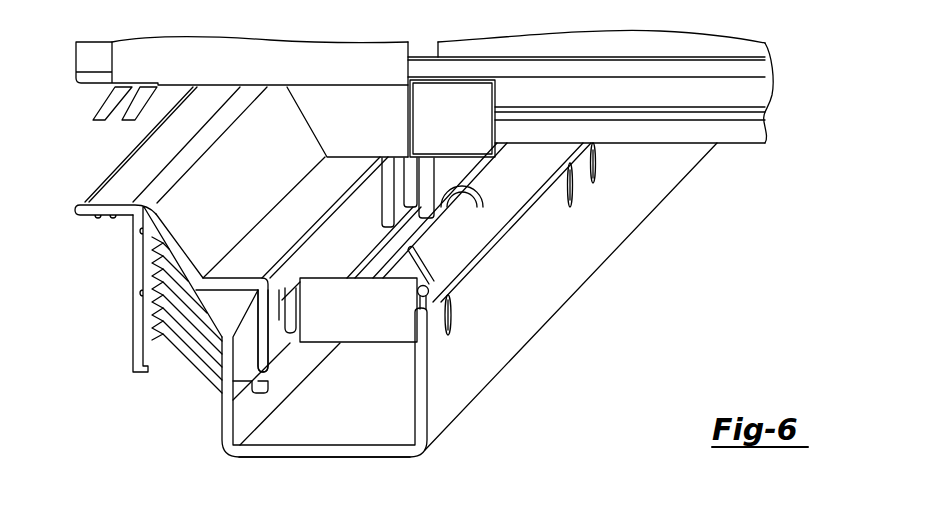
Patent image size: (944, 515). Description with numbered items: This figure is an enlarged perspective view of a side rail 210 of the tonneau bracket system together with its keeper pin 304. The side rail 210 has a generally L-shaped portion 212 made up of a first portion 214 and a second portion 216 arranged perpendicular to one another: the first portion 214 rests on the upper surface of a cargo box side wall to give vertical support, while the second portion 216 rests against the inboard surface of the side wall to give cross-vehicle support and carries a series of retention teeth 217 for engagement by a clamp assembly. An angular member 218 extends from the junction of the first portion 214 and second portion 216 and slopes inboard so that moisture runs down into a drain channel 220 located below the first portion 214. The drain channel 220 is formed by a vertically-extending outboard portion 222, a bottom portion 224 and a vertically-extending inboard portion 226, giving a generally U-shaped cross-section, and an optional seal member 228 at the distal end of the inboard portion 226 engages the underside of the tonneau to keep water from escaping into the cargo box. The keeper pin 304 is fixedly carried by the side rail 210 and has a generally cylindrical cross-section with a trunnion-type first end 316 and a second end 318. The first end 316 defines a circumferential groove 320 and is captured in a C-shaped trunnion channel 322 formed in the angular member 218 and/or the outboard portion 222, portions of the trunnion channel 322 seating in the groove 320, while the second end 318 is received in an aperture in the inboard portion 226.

The side rail 210 is at (612, 405).
The L-shaped portion 212 is at (147, 324).
The first portion 214 is at (93, 218).
The second portion 216 is at (127, 343).
The retention teeth 217 is at (180, 347).
The angular member 218 is at (213, 327).
The drain channel 220 is at (440, 316).
The vertically-extending outboard portion 222 is at (221, 420).
The bottom portion 224 is at (327, 450).
The vertically-extending inboard portion 226 is at (567, 285).
The seal member 228 is at (518, 197).
The keeper pin 304 is at (395, 318).
The first end 316 is at (270, 337).
The second end 318 is at (457, 317).
The circumferential groove 320 is at (297, 330).
The trunnion channel 322 is at (250, 382).